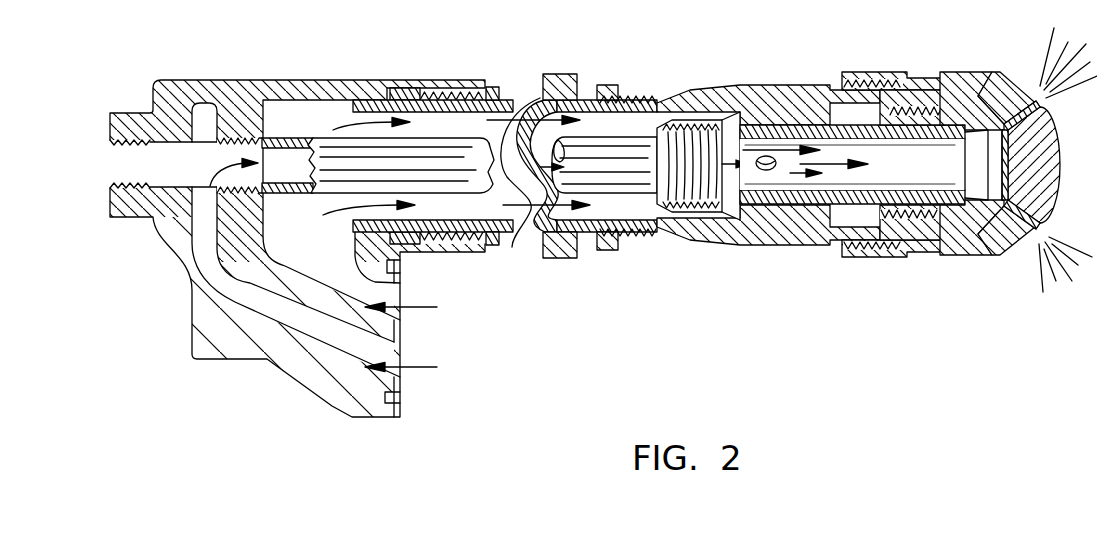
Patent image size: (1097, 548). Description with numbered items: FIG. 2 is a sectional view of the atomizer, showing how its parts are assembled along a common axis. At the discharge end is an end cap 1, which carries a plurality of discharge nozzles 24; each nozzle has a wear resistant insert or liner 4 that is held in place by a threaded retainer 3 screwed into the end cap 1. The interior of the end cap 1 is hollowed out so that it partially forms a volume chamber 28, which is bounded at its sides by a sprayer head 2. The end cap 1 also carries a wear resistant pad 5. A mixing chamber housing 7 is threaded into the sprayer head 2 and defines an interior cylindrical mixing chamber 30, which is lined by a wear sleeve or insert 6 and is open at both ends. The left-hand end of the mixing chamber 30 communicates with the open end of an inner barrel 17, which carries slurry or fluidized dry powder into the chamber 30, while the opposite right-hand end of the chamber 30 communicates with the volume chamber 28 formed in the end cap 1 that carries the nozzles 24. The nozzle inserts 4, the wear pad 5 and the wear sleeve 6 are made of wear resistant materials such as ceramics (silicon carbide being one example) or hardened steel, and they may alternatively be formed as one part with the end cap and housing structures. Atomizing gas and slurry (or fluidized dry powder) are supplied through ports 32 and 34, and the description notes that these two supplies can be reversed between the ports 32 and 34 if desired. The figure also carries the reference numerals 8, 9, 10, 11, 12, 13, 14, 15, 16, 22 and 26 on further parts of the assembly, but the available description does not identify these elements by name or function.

The end cap 1 is at (980, 238).
The sprayer head 2 is at (937, 240).
The threaded retainer 3 is at (1030, 110).
The wear resistant insert 4 is at (1003, 74).
The wear resistant pad 5 is at (1008, 160).
The wear sleeve 6 is at (868, 240).
The mixing chamber housing 7 is at (800, 205).
The upper nozzle body 8 is at (812, 92).
The flange ring 9 is at (607, 234).
The connector flange 10 is at (575, 240).
The inner feed tube 11 is at (506, 222).
The outer sleeve 12 is at (488, 86).
The threads 13 is at (430, 88).
The packing 14 is at (405, 88).
The housing body 15 is at (310, 82).
The inlet port 16 is at (128, 172).
The inner barrel 17 is at (462, 190).
The coupling nut 22 is at (756, 200).
The discharge nozzles 24 is at (1036, 236).
The inner connector tube 26 is at (650, 207).
The volume chamber 28 is at (975, 105).
The mixing chamber 30 is at (888, 172).
The port 32 is at (394, 319).
The port 34 is at (394, 378).